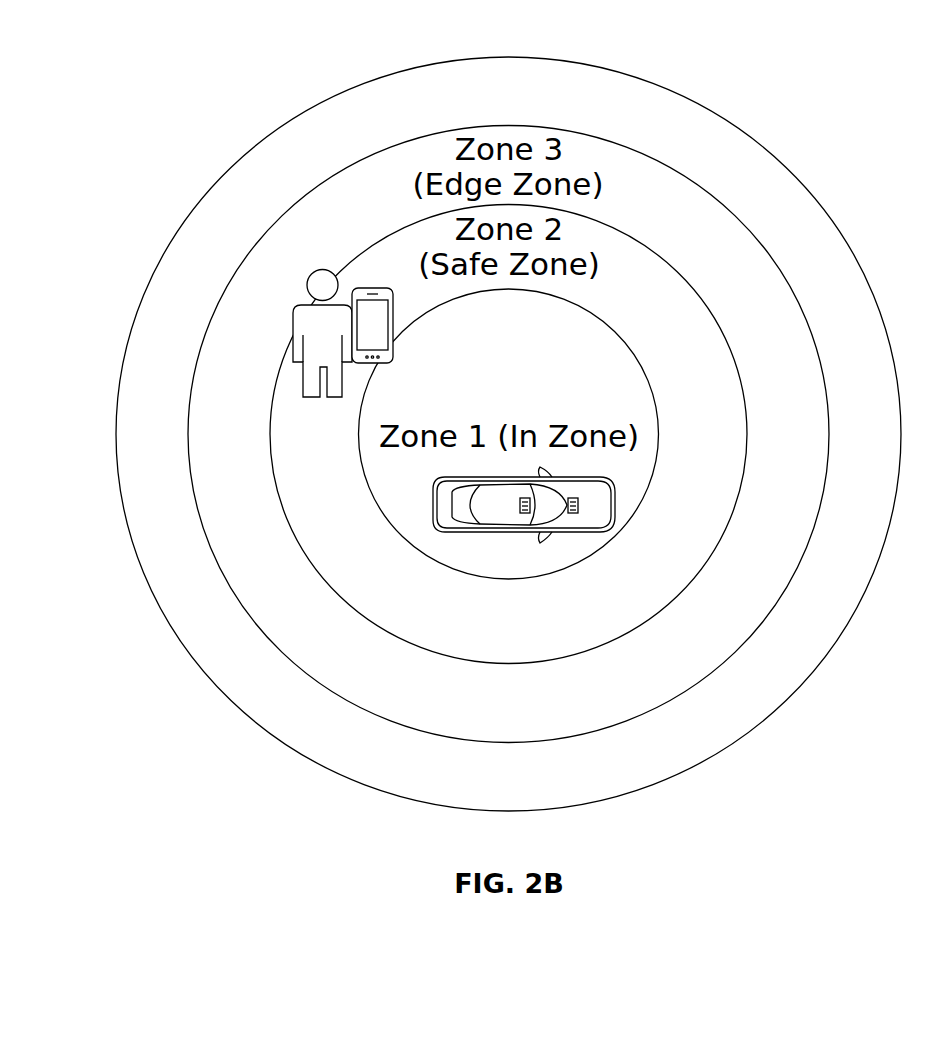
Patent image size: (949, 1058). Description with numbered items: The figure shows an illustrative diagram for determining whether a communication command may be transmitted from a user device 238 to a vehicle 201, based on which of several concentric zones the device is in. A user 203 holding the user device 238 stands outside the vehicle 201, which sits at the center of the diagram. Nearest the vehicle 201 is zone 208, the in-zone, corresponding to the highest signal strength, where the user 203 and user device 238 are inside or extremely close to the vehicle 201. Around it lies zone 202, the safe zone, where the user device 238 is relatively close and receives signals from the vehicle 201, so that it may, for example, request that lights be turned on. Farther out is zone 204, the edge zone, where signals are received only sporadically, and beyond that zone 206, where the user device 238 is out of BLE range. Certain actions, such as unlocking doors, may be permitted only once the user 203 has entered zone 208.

The vehicle 201 is at (614, 514).
The zone (safe zone) 202 is at (710, 387).
The user 203 is at (303, 325).
The zone (edge zone) 204 is at (788, 335).
The zone 206 is at (884, 400).
The zone (in-zone) 208 is at (574, 386).
The user device 238 is at (360, 288).